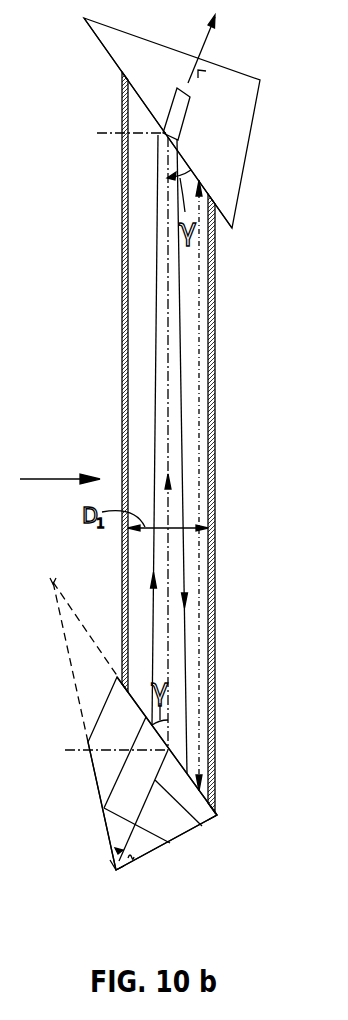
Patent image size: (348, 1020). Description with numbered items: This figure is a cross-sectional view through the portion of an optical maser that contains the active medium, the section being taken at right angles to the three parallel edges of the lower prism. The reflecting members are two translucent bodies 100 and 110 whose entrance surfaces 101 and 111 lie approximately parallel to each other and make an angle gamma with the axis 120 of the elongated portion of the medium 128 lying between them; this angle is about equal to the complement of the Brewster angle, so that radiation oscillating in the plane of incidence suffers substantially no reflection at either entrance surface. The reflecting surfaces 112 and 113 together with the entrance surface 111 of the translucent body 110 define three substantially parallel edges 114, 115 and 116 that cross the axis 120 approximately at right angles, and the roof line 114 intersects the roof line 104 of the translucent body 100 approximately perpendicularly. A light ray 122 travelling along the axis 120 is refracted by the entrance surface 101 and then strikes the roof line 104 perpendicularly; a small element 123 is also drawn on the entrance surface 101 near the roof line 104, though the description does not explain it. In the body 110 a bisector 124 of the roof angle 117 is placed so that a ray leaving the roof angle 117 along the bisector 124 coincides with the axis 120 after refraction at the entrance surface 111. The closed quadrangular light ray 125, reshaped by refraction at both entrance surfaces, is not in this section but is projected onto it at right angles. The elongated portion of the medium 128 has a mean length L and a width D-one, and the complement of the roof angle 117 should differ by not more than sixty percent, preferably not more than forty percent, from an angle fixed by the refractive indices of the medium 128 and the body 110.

The translucent body 100 is at (240, 127).
The entrance surface 101 is at (138, 98).
The roof line 104 is at (162, 47).
The window element on upper prism face 123 is at (187, 86).
The axis 120 is at (168, 625).
The light ray 122 is at (178, 488).
The light ray 125 is at (185, 503).
The medium 128 is at (203, 685).
The edge 115 is at (52, 590).
The translucent body 110 is at (143, 845).
The entrance surface 111 is at (180, 762).
The reflecting surface 112 is at (187, 835).
The reflecting surface 113 is at (95, 780).
The roof line 114 is at (113, 871).
The edge 116 is at (217, 815).
The bisector 124 is at (203, 822).
The roof angle 117 is at (125, 868).